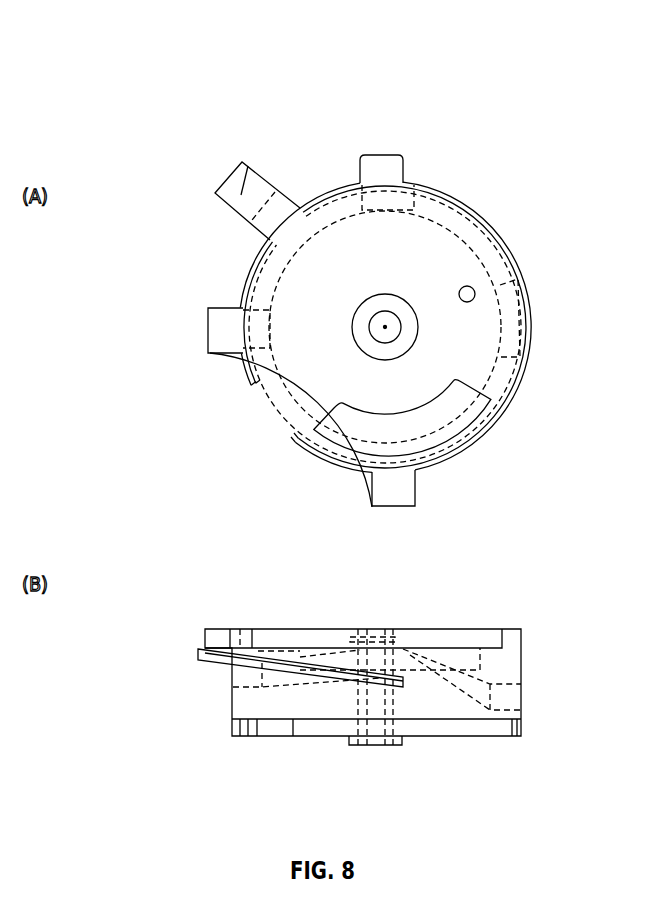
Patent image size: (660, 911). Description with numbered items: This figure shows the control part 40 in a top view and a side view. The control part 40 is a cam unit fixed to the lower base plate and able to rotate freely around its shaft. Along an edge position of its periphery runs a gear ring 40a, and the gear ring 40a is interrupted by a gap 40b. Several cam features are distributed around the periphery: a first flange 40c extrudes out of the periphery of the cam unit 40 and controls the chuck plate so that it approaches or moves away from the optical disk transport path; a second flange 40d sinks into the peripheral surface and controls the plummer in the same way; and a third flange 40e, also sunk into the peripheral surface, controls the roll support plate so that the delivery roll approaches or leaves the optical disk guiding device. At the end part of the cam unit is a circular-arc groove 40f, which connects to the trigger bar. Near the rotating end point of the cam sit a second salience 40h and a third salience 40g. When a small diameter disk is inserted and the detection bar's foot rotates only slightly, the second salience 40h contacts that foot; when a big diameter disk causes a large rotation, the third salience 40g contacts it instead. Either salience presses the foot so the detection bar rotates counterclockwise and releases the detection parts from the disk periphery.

The control part 40 is at (348, 137).
The gear ring 40a is at (473, 212).
The gap 40b is at (272, 403).
The first flange 40c is at (285, 458).
The second flange 40d is at (520, 308).
The third flange 40e is at (265, 272).
The circular-arc groove 40f is at (472, 412).
The third salience 40g is at (237, 180).
The second salience 40h is at (403, 157).